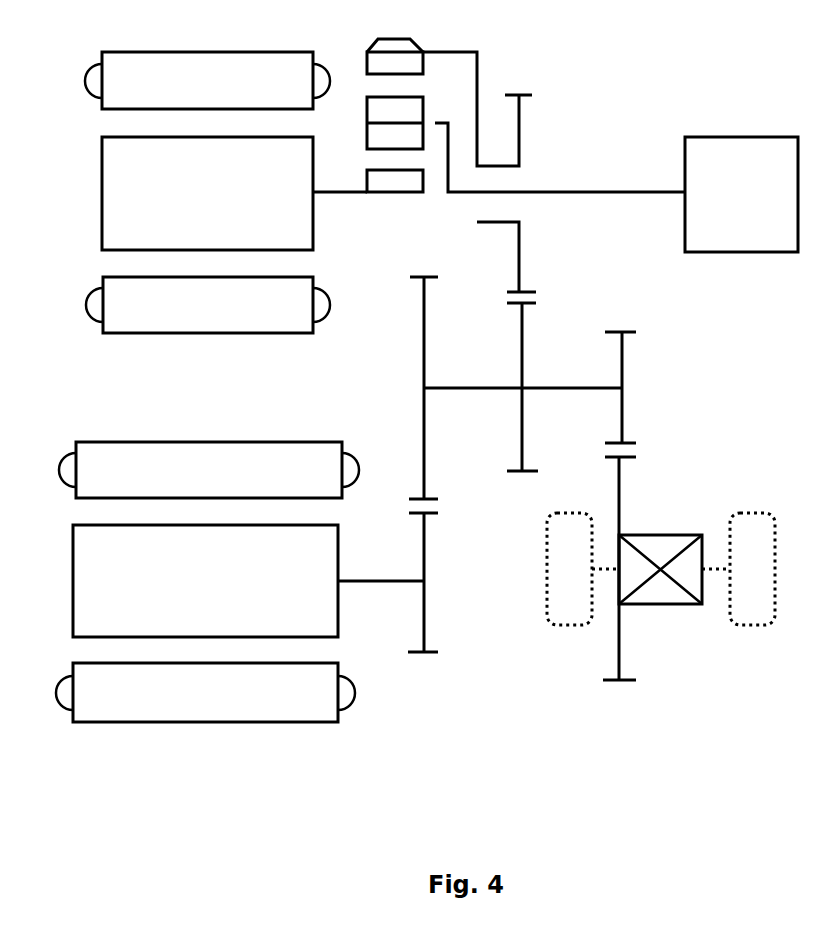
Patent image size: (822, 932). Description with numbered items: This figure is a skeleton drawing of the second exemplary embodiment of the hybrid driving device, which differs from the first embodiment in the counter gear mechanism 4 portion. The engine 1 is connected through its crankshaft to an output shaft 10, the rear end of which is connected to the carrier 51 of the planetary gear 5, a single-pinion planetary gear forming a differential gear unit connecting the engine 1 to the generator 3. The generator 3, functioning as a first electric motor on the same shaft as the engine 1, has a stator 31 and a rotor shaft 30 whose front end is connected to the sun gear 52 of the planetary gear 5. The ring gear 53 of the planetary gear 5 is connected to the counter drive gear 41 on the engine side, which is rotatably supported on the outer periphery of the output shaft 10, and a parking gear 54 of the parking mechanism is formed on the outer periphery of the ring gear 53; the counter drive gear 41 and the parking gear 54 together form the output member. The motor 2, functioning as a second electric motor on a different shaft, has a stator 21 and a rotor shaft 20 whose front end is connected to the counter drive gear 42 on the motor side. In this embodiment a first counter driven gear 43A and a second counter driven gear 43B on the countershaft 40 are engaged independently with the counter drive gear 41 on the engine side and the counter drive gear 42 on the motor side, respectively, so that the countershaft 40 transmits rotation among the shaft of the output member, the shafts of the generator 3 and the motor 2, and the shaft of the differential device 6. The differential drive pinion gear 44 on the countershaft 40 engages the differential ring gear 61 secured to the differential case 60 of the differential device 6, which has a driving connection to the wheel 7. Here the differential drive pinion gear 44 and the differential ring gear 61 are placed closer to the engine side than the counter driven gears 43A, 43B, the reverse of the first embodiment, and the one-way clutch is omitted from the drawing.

The engine 1 is at (725, 137).
The output shaft 10 is at (610, 192).
The motor 2 is at (62, 577).
The rotor shaft 20 is at (372, 580).
The stator 21 is at (128, 440).
The generator 3 is at (85, 193).
The rotor shaft 30 is at (346, 195).
The stator 31 is at (230, 333).
The counter gear mechanism 4 is at (512, 360).
The countershaft 40 is at (482, 390).
The counter drive gear on the engine side 41 is at (519, 268).
The counter drive gear on the motor side 42 is at (424, 530).
The first counter driven gear 43A is at (522, 337).
The second counter driven gear 43B is at (425, 327).
The differential drive pinion gear 44 is at (622, 358).
The planetary gear 5 is at (426, 146).
The carrier 51 is at (433, 123).
The sun gear 52 is at (400, 195).
The ring gear 53 is at (367, 57).
The parking gear 54 is at (412, 45).
The differential device 6 is at (669, 568).
The differential case 60 is at (660, 605).
The differential ring gear 61 is at (622, 485).
The wheel 7 is at (547, 585).